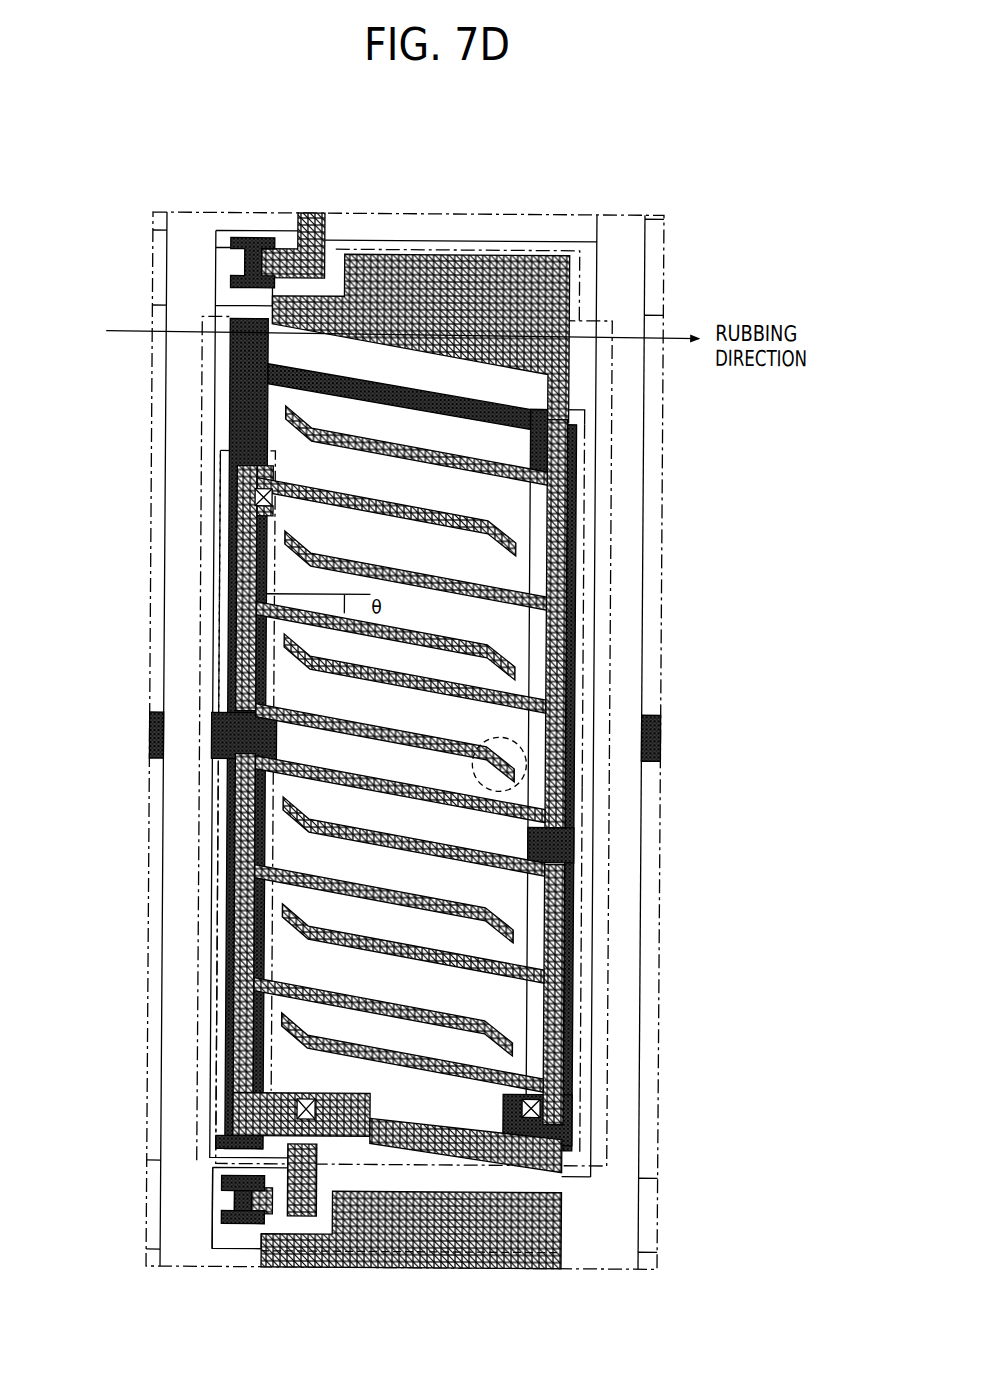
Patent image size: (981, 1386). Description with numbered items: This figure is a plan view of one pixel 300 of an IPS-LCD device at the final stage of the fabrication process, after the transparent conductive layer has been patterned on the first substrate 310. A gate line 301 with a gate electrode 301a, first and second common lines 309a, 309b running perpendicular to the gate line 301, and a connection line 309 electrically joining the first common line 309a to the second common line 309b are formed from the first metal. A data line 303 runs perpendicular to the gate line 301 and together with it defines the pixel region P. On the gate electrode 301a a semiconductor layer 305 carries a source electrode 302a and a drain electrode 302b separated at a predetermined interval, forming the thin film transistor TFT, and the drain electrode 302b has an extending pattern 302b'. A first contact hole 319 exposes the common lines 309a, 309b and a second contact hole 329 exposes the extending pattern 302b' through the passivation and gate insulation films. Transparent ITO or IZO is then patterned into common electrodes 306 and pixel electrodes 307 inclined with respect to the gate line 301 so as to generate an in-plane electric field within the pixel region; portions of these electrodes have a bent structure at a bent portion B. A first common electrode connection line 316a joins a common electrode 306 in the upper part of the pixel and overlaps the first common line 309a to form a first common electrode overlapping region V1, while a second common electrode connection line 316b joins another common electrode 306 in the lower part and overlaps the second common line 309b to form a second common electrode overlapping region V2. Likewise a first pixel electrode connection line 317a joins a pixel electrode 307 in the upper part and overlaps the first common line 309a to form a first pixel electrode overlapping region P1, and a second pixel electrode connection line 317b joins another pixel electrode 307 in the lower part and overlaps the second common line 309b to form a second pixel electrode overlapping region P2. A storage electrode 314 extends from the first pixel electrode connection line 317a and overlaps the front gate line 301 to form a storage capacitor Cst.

The liquid crystal display pixel 300 is at (115, 193).
The gate line 301 is at (655, 1217).
The gate electrode 301a is at (228, 1224).
The source electrode 302a is at (228, 1196).
The drain electrode 302b is at (284, 1241).
The extending pattern of the drain electrode 302b' is at (556, 1147).
The data line 303 is at (167, 1125).
The semiconductor layer 305 is at (243, 1224).
The common electrode 306 is at (280, 977).
The pixel electrode 307 is at (285, 1005).
The connection line 309 is at (465, 400).
The first common line 309a is at (215, 733).
The second common line 309b is at (577, 850).
The first substrate 310 is at (615, 220).
The storage electrode 314 is at (570, 290).
The first common electrode connection line 316a is at (245, 650).
The second common electrode connection line 316b is at (568, 946).
The first pixel electrode connection line 317a is at (575, 550).
The second pixel electrode connection line 317b is at (245, 885).
The first contact hole 319 is at (262, 500).
The second contact hole 329 is at (270, 1105).
The storage capacitor Cst is at (510, 248).
The pixel region P is at (620, 440).
The first pixel electrode overlapping region P1 is at (590, 625).
The second pixel electrode overlapping region P2 is at (300, 956).
The first common electrode overlapping region V1 is at (245, 588).
The second common electrode overlapping region V2 is at (582, 1000).
The bent portion B is at (527, 742).
The thin film transistor TFT is at (200, 1212).